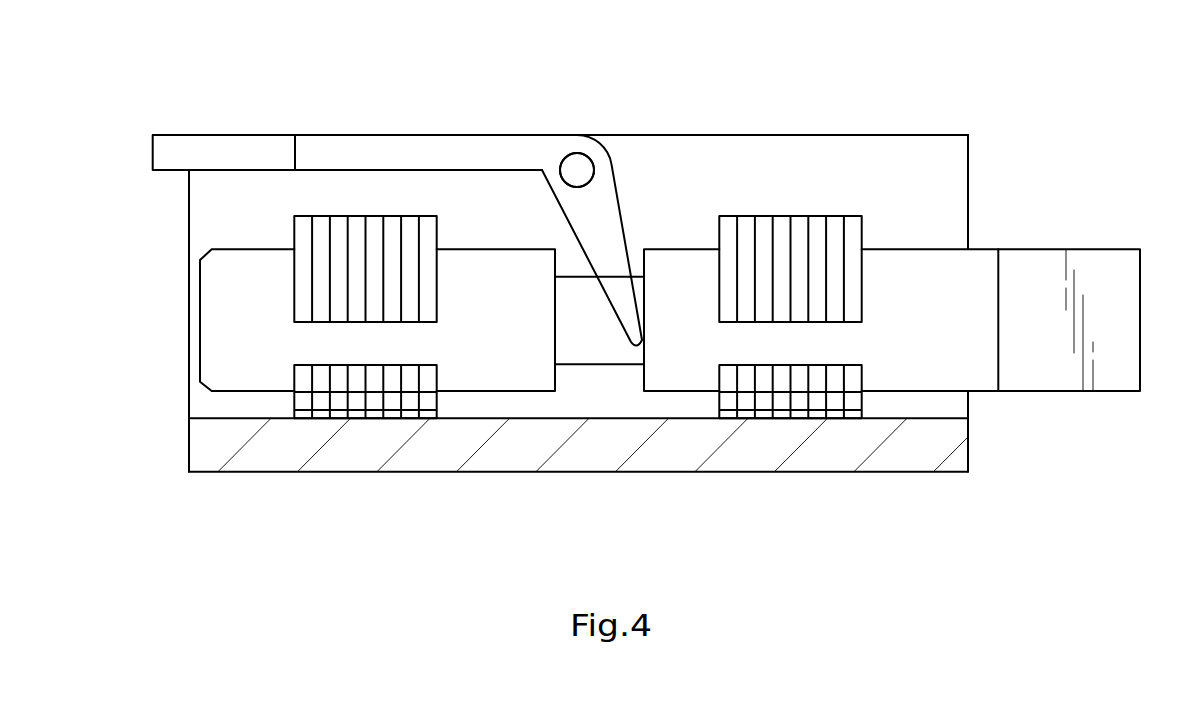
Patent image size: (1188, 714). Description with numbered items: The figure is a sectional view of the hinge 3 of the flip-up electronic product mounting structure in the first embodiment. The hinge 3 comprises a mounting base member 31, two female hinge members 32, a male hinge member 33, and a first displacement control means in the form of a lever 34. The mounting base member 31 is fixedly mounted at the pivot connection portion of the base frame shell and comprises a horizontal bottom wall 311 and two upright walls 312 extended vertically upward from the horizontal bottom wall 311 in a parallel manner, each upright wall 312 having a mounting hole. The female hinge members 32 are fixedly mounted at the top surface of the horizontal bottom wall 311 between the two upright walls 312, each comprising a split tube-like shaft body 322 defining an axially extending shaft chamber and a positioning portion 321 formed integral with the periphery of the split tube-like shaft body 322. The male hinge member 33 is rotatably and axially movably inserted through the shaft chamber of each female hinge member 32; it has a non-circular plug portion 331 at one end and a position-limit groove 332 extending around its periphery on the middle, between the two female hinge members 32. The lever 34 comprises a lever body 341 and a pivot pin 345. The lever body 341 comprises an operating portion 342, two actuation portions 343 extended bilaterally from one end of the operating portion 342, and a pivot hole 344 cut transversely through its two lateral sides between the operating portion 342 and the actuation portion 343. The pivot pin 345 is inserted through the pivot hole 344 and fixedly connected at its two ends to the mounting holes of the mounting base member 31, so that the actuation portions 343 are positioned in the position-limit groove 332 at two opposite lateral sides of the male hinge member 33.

The hinge 3 is at (966, 133).
The mounting base member 31 is at (790, 478).
The horizontal bottom wall 311 is at (955, 452).
The upright wall 312 is at (197, 208).
The female hinge member 32 is at (644, 299).
The positioning portion 321 is at (355, 413).
The split tube-like shaft body 322 is at (357, 222).
The male hinge member 33 is at (925, 249).
The non-circular plug portion 331 is at (1092, 262).
The position-limit groove 332 is at (600, 365).
The lever 34 is at (233, 113).
The lever body 341 is at (350, 156).
The operating portion 342 is at (167, 155).
The actuation portion 343 is at (620, 192).
The pivot hole 344 is at (591, 152).
The pivot pin 345 is at (575, 168).